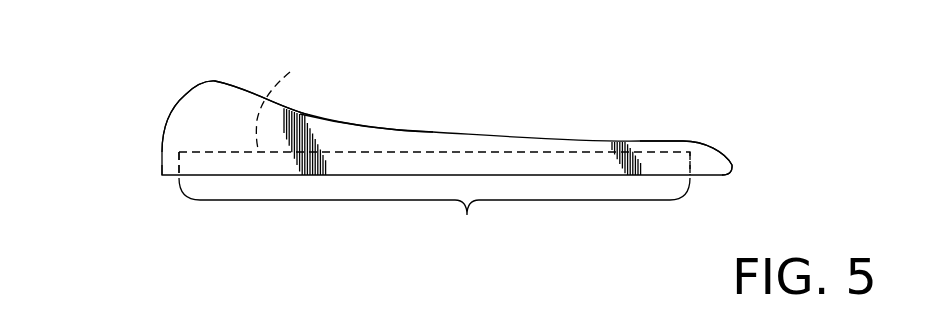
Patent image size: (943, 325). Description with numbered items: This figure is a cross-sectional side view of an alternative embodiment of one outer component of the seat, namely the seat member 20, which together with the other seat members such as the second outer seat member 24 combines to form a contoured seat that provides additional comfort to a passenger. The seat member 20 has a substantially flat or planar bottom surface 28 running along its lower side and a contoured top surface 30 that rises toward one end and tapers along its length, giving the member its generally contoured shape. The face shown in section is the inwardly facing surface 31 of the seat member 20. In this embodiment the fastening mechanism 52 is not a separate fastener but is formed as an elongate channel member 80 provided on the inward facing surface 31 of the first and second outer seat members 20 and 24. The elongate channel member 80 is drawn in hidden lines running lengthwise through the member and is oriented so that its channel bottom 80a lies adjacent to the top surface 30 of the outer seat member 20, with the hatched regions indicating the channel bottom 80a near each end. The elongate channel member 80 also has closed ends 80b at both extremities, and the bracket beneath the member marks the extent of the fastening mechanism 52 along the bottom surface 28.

The seat member 20 is at (433, 132).
The seat member 24 is at (366, 123).
The bottom surface 28 is at (167, 178).
The top surface 30 is at (668, 140).
The inwardly facing surface 31 is at (197, 112).
The fastening mechanism 52 is at (434, 213).
The elongate channel member 80 is at (673, 163).
The channel bottom 80a is at (448, 111).
The closed ends 80b is at (177, 160).